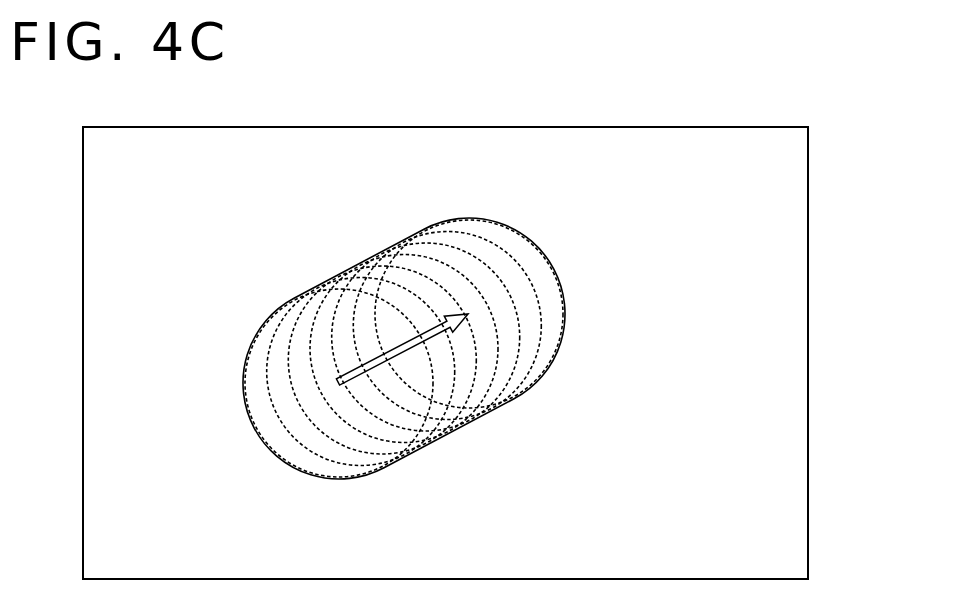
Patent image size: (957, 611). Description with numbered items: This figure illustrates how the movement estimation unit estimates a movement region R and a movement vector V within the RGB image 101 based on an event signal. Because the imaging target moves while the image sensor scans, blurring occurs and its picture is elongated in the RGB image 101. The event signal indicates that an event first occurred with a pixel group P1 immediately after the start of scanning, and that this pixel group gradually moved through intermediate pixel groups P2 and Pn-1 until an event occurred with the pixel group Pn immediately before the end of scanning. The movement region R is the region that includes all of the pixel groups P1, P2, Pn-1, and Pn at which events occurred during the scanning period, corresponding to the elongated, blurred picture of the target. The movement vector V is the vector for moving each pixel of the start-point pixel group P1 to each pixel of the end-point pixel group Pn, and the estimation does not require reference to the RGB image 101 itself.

The RGB image 101 is at (152, 127).
The movement region R is at (373, 255).
The movement vector V is at (377, 357).
The pixel group P1 is at (433, 436).
The pixel group P2 is at (443, 412).
The pixel group Pn-1 is at (548, 345).
The pixel group Pn is at (563, 312).